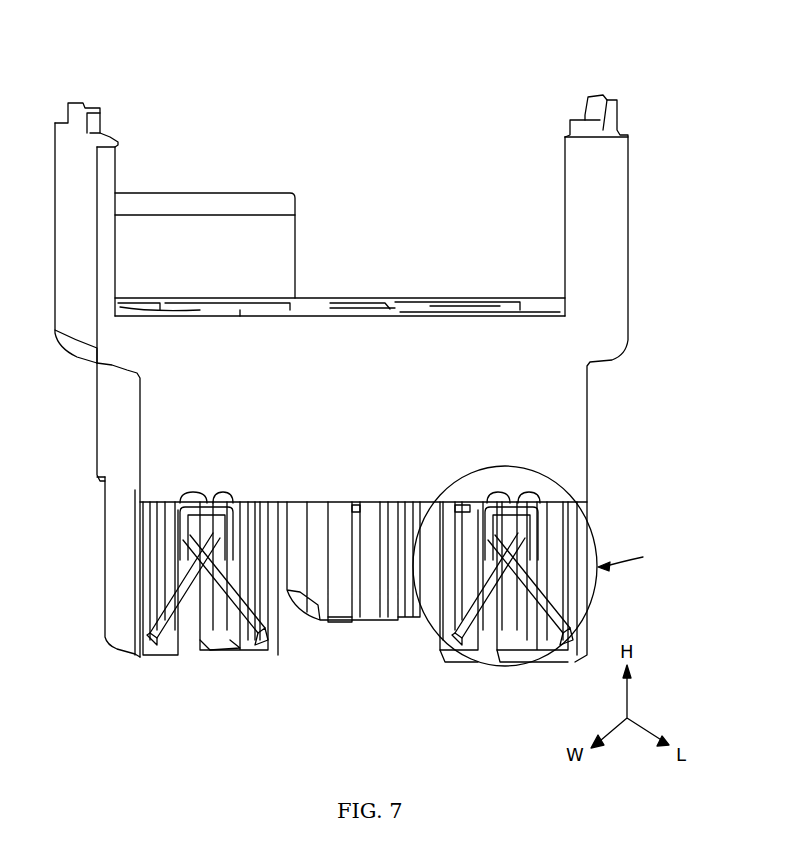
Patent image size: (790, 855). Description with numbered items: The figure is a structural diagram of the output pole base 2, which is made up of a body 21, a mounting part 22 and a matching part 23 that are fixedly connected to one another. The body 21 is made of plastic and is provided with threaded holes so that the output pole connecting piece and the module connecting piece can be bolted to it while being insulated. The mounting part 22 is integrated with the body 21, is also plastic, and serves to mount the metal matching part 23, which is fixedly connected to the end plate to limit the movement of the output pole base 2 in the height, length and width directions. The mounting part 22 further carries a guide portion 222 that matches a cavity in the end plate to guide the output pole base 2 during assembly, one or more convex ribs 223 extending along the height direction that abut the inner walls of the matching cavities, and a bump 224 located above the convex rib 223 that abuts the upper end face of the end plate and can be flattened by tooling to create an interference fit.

The output pole base 2 is at (356, 382).
The body 21 is at (370, 297).
The mounting part 22 is at (112, 565).
The guide portion 222 is at (320, 620).
The convex rib 223 is at (362, 620).
The bump 224 is at (358, 500).
The matching part 23 is at (202, 676).